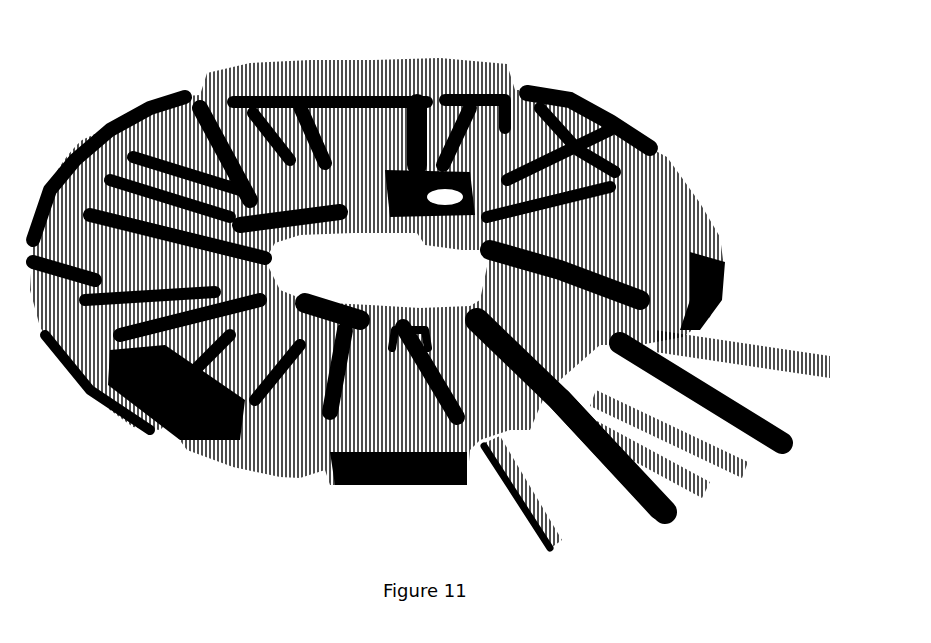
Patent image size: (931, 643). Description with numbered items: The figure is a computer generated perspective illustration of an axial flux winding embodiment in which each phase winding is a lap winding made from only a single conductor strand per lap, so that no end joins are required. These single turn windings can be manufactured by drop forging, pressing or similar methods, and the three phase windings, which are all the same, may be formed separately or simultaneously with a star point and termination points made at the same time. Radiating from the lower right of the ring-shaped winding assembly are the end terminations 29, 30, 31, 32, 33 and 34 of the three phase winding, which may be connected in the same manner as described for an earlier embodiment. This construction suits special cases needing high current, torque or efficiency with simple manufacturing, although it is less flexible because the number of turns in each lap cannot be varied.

The end termination 29 is at (832, 386).
The end termination 30 is at (784, 444).
The end termination 31 is at (748, 468).
The end termination 32 is at (706, 496).
The end termination 33 is at (666, 518).
The end termination 34 is at (566, 552).